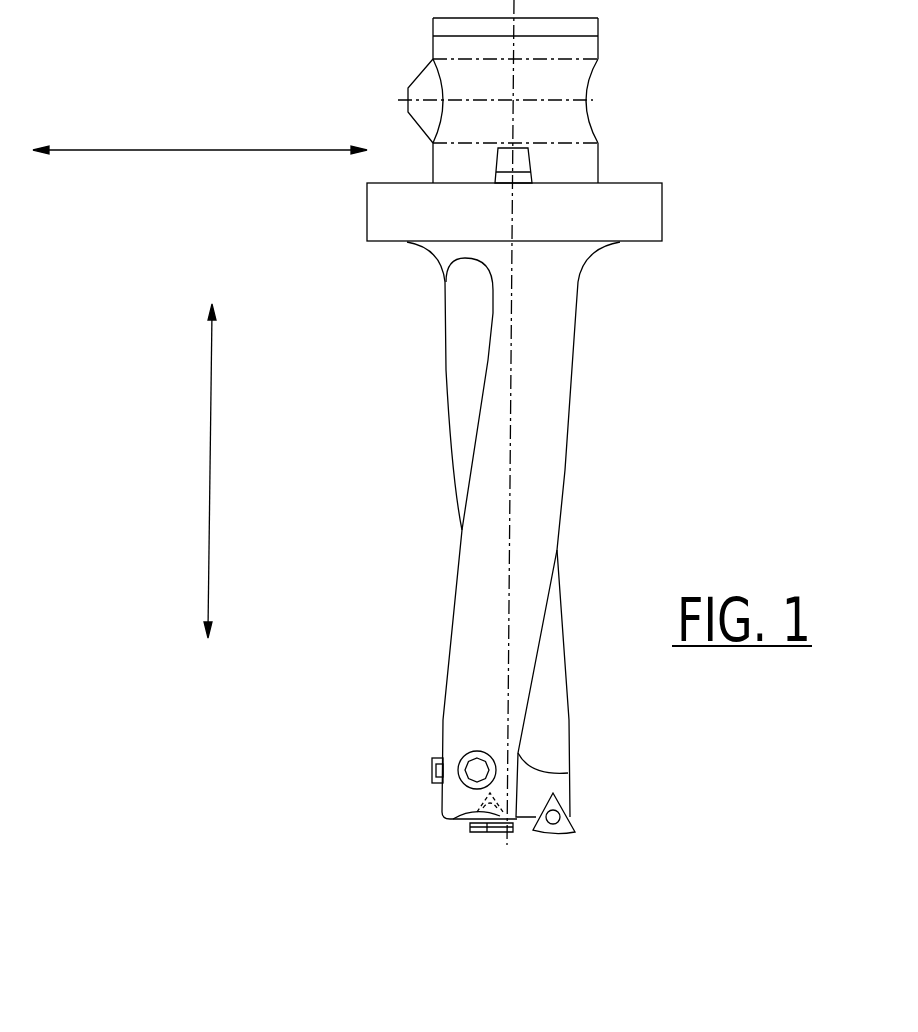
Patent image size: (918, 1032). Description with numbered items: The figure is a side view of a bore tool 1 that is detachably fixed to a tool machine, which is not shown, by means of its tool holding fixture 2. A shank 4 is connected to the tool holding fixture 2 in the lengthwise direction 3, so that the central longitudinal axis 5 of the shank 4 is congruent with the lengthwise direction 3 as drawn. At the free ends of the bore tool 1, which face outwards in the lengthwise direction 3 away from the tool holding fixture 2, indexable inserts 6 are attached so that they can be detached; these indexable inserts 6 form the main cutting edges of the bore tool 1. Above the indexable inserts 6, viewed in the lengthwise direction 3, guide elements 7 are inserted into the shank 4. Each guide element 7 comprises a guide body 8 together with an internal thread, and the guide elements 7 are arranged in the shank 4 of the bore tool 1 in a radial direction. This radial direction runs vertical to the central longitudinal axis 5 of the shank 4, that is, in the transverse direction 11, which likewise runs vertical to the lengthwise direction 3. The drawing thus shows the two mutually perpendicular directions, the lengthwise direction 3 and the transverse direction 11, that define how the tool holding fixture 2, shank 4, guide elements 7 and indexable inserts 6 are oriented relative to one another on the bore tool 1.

The bore tool 1 is at (663, 182).
The tool holding fixture 2 is at (557, 83).
The lengthwise direction 3 is at (210, 472).
The shank 4 is at (550, 446).
The central longitudinal axis 5 is at (508, 622).
The indexable inserts 6 is at (445, 345).
The guide elements 7 is at (432, 774).
The guide body 8 is at (477, 751).
The transverse direction 11 is at (198, 150).